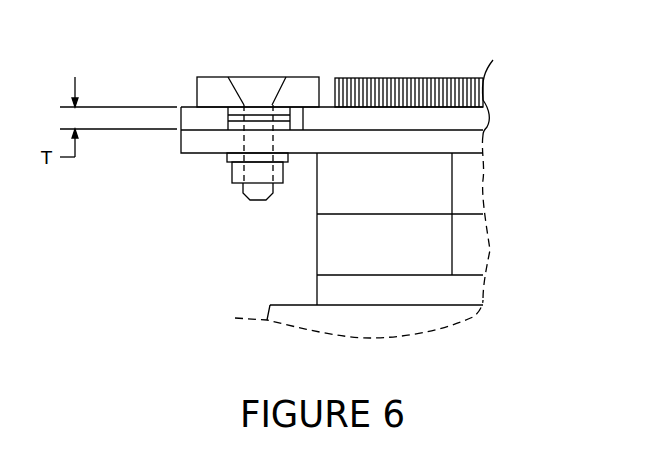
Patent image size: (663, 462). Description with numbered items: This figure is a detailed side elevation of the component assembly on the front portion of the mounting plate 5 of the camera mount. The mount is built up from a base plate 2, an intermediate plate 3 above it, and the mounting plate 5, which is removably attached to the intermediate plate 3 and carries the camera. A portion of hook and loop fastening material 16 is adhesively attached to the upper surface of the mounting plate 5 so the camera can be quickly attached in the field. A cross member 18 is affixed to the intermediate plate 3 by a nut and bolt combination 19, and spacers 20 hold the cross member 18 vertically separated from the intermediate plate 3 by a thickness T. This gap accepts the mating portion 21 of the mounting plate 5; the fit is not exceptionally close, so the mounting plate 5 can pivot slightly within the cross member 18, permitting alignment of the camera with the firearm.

The base plate 2 is at (440, 290).
The intermediate plate 3 is at (440, 143).
The mounting plate 5 is at (457, 122).
The hook and loop fastening material 16 is at (388, 85).
The cross member 18 is at (208, 88).
The nut and bolt combinations 19 is at (235, 178).
The spacers 20 is at (238, 120).
The mating portion 21 is at (188, 115).